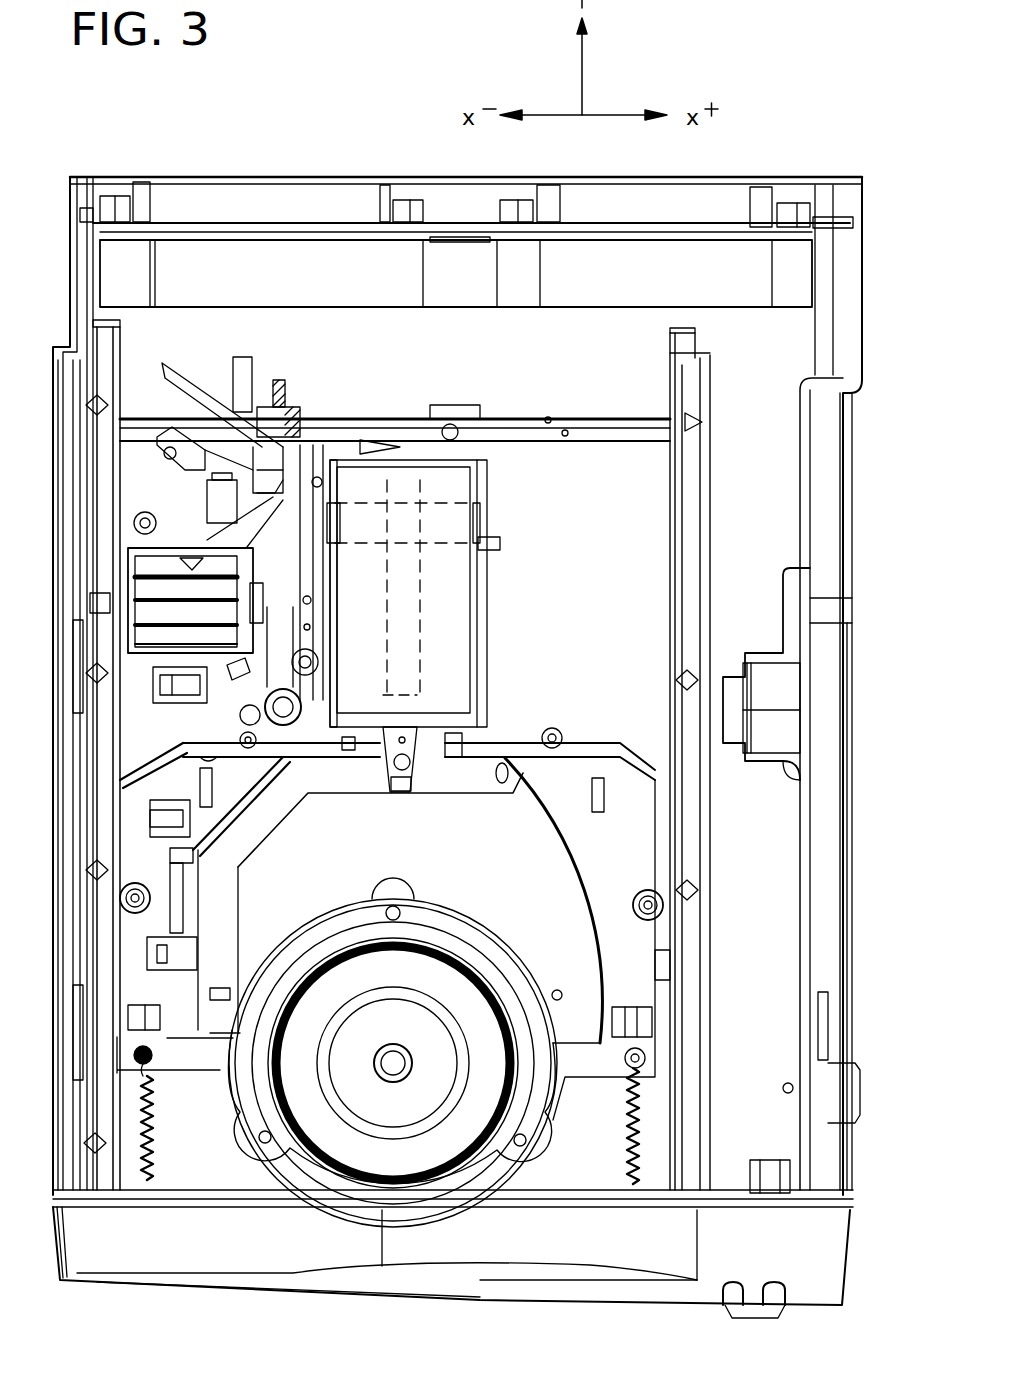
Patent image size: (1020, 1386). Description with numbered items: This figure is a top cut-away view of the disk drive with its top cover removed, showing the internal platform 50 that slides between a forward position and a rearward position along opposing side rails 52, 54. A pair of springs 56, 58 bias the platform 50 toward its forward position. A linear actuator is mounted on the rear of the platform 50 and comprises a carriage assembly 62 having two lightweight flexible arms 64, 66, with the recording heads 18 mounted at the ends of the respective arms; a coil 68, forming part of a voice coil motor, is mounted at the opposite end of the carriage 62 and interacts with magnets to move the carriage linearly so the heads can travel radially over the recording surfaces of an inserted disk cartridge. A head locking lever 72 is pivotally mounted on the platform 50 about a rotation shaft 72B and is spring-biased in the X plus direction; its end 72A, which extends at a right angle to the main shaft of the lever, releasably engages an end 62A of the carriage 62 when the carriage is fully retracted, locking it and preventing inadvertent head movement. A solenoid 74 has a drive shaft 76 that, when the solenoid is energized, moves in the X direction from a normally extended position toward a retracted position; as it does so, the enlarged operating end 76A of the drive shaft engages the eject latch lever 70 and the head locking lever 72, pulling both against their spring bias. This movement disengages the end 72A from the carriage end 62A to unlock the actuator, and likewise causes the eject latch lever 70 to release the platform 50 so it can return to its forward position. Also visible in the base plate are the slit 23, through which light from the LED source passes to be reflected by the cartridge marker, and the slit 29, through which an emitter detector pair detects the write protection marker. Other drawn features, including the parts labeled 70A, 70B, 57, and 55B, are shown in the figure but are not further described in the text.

The lever stub 70A is at (224, 410).
The head locking lever 72 is at (325, 455).
The end of the head locking lever 72A is at (358, 446).
The rotation shaft 72B is at (308, 652).
The end of the actuator carriage 62A is at (408, 480).
The eject latch lever 70 is at (227, 500).
The lever pivot 70B is at (258, 694).
The solenoid 74 is at (153, 565).
The side rail 52 is at (103, 643).
The enlarged operating end 76A is at (300, 603).
The drive shaft 76 is at (270, 610).
The carriage assembly 62 is at (422, 587).
The coil 68 is at (472, 517).
The flexible arm 64 is at (402, 590).
The flexible arm 66 is at (423, 710).
The recording head 18 is at (405, 795).
The plate 57 is at (257, 780).
The slit 29 is at (208, 783).
The slit 23 is at (577, 862).
The internal platform 50 is at (567, 933).
The tab 55B is at (602, 800).
The side rail 54 is at (698, 545).
The spring 56 is at (143, 1167).
The spring 58 is at (630, 1170).